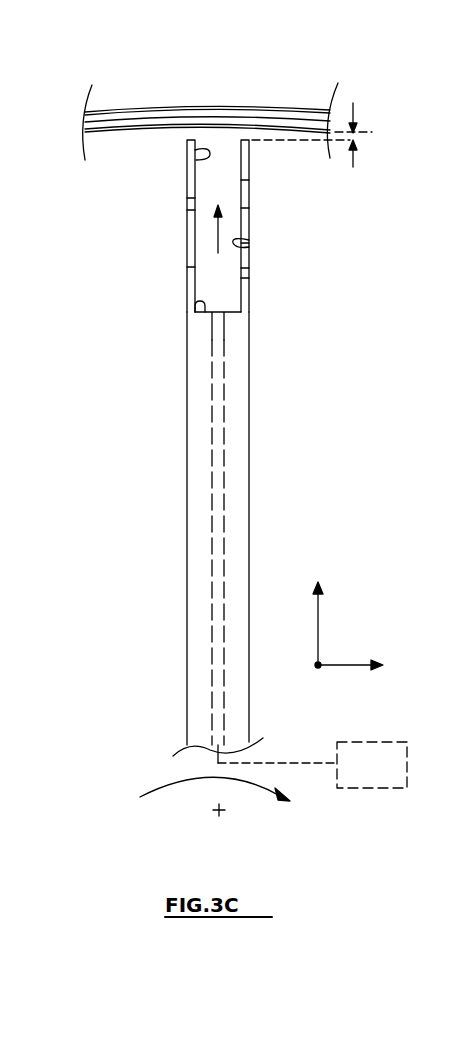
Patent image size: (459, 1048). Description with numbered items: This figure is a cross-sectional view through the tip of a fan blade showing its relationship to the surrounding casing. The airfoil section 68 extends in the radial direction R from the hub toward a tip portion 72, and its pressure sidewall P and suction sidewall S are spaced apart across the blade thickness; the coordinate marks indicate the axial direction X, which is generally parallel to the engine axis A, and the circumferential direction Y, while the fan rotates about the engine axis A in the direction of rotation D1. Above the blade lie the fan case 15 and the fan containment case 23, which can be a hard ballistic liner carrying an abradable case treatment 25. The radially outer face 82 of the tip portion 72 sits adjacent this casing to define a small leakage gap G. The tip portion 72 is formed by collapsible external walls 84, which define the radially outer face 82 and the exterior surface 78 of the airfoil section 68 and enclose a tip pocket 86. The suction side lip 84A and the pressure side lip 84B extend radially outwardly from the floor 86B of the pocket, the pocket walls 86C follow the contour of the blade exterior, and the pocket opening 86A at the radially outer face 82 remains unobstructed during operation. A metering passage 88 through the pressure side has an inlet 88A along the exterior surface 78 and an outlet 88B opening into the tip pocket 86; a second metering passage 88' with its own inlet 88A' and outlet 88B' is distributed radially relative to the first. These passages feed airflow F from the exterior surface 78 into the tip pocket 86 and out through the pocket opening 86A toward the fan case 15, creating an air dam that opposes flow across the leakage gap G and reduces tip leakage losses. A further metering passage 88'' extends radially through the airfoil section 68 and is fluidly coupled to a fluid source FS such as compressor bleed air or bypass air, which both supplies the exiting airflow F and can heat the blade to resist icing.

The fan case 15 is at (131, 77).
The fan containment case 23 is at (207, 102).
The abradable case treatment 25 is at (165, 133).
The radially outer face 82 is at (250, 135).
The leakage gap G is at (354, 108).
The tip pocket 86 is at (187, 210).
The collapsible external walls 84 is at (119, 226).
The suction side lip 84A is at (187, 268).
The pressure side lip 84B is at (249, 256).
The outlet 88B' is at (141, 196).
The outlet 88B is at (147, 288).
The pocket opening 86A is at (195, 150).
The floor 86B is at (197, 303).
The walls of the tip pocket 86C is at (249, 243).
The airflow F is at (187, 234).
The tip portion 72 is at (249, 228).
The metering passage 88' is at (272, 174).
The inlet 88A' is at (304, 193).
The inlet 88A is at (300, 288).
The metering passage 88 is at (253, 311).
The metering passage 88'' is at (261, 542).
The pressure sidewall P is at (249, 412).
The airfoil section 68 is at (195, 452).
The exterior surface 78 is at (249, 357).
The suction sidewall S is at (187, 380).
The fluid source FS is at (388, 777).
The direction of rotation D1 is at (150, 790).
The engine axis A is at (220, 812).
The radial direction R is at (318, 630).
The axial direction X is at (318, 666).
The circumferential direction Y is at (348, 666).